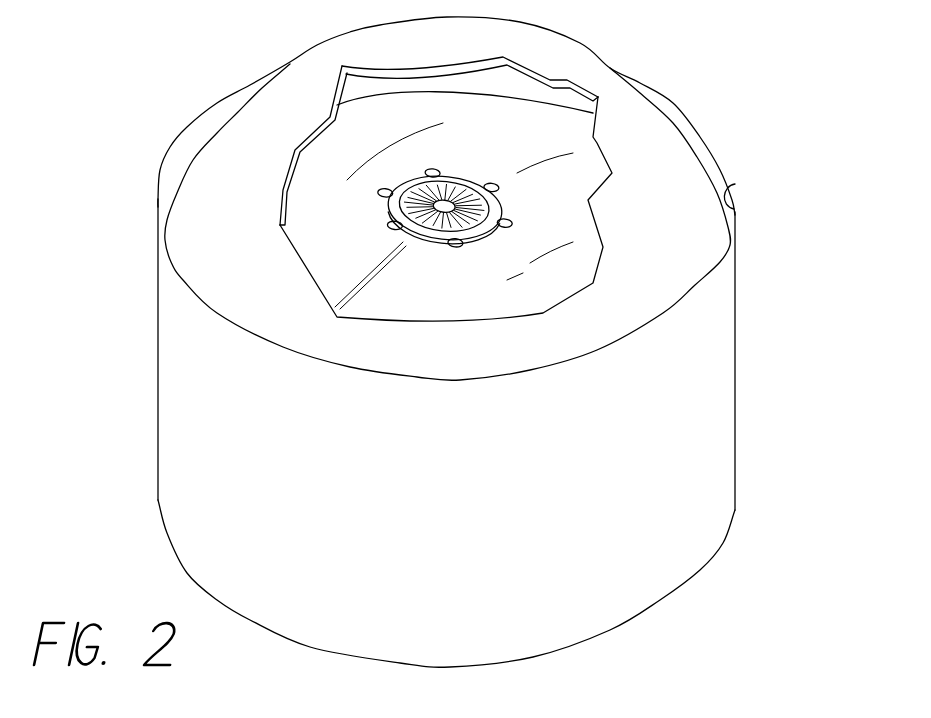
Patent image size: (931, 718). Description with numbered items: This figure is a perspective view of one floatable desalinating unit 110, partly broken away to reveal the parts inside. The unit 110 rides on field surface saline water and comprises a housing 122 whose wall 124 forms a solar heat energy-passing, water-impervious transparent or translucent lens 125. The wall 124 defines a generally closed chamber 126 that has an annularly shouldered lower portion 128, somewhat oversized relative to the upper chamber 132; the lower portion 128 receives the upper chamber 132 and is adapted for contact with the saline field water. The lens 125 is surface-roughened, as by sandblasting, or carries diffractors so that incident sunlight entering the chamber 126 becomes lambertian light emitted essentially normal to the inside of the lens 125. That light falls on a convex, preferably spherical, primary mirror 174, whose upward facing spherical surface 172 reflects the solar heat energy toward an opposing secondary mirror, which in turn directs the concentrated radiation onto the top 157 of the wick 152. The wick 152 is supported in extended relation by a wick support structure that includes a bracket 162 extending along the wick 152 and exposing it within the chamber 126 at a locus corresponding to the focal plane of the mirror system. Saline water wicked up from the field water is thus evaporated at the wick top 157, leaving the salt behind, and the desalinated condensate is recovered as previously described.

The unit 110 is at (744, 126).
The housing 122 is at (735, 200).
The wall 124 is at (477, 40).
The lens 125 is at (660, 230).
The chamber 126 is at (357, 84).
The lower portion 128 is at (737, 448).
The upper chamber 132 is at (213, 158).
The wick 152 is at (445, 228).
The wick top 157 is at (458, 187).
The bracket 162 is at (503, 203).
The spherical surface 172 is at (313, 250).
The primary mirror 174 is at (346, 223).